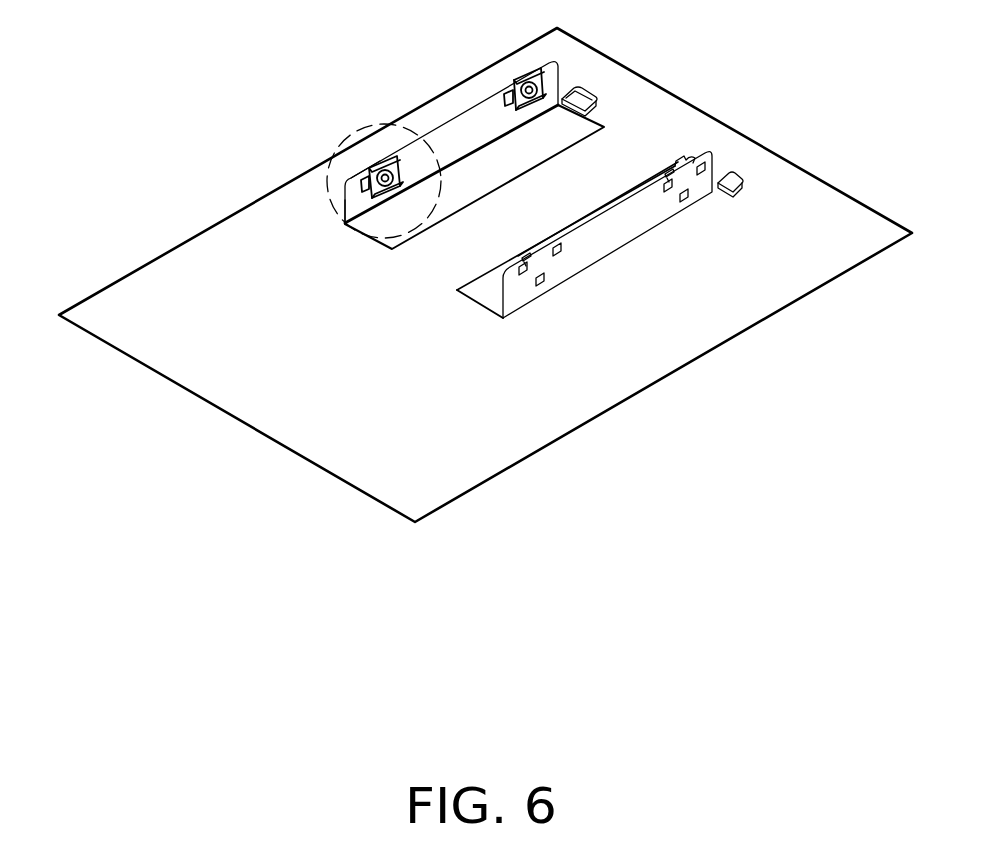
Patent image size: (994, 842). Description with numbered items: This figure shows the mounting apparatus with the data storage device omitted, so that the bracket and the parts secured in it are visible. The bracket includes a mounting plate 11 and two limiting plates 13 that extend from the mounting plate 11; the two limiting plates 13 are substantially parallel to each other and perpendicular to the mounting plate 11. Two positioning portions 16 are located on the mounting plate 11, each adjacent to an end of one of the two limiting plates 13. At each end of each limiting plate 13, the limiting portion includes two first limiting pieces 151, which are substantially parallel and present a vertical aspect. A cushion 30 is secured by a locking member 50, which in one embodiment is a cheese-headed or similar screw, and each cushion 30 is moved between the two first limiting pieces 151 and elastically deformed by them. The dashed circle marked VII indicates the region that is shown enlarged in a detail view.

The mounting plate 11 is at (652, 123).
The limiting plate 13 is at (485, 115).
The positioning portion 16 is at (578, 92).
The cushion 30 is at (362, 160).
The locking member 50 is at (379, 158).
The first limiting piece 151 is at (358, 172).
The detail view circle VII is at (330, 200).